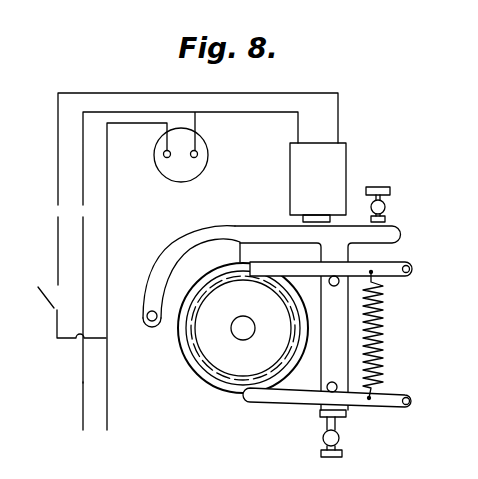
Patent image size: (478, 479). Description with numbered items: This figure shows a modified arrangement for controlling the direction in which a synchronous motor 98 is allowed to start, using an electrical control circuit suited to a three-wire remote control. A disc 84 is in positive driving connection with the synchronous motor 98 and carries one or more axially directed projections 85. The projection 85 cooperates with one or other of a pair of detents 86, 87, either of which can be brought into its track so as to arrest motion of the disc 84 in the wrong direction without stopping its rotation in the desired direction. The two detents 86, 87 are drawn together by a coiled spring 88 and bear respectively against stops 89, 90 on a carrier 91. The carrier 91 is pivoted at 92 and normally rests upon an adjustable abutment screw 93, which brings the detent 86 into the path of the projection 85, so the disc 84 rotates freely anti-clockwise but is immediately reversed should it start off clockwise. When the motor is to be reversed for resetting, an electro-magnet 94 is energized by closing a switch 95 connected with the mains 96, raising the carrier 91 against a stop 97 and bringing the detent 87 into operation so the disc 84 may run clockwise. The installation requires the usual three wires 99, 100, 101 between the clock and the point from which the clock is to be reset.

The disc 84 is at (222, 358).
The axially directed projection 85 is at (245, 262).
The detent 86 is at (413, 282).
The detent 87 is at (268, 397).
The coiled spring 88 is at (383, 341).
The stop 89 is at (338, 282).
The stop 90 is at (338, 387).
The carrier 91 is at (401, 240).
The pivot 92 is at (154, 322).
The adjustable abutment screw 93 is at (338, 423).
The electro-magnet 94 is at (333, 173).
The switch 95 is at (54, 308).
The mains 96 is at (83, 382).
The stop 97 is at (383, 218).
The synchronous motor 98 is at (207, 153).
The wire 99 is at (61, 107).
The wire 100 is at (83, 182).
The wire 101 is at (108, 228).